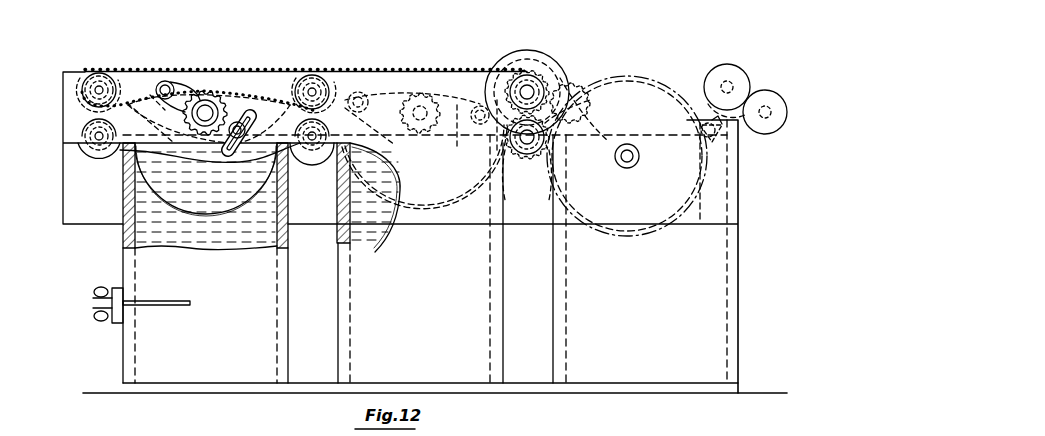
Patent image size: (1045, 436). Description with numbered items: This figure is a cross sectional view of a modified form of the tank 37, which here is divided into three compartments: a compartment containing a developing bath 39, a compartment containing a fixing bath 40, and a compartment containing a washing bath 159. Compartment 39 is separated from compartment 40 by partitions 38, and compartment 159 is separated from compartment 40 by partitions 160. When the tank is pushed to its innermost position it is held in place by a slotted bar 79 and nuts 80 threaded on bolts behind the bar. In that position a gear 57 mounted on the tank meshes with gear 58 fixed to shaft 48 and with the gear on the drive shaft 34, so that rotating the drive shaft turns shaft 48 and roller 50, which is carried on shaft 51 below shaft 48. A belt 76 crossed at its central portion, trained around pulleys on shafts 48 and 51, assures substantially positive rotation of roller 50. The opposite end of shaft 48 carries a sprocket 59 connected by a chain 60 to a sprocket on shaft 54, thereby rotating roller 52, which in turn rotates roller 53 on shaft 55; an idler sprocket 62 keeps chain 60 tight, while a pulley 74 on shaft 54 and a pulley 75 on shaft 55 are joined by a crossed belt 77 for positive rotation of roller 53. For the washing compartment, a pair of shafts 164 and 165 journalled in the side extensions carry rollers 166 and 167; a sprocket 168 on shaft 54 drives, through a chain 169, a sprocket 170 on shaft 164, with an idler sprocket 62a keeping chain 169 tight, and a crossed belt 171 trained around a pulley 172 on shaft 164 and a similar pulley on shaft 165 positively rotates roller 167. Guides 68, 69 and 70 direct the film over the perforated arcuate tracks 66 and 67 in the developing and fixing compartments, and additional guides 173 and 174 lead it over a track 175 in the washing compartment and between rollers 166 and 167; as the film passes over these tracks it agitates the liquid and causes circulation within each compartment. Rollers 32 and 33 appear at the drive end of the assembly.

The roller 32 is at (731, 63).
The roller 33 is at (788, 112).
The drive shaft 34 is at (745, 84).
The tank 37 is at (748, 290).
The partitions 38 is at (490, 308).
The developing bath compartment 39 is at (705, 170).
The fixing bath compartment 40 is at (375, 243).
The shaft 48 is at (531, 90).
The roller 50 is at (521, 160).
The shaft 51 is at (527, 179).
The roller 52 is at (312, 73).
The roller 53 is at (318, 152).
The shaft 54 is at (300, 92).
The shaft 55 is at (274, 158).
The gear 57 is at (650, 86).
The gear 58 is at (527, 50).
The sprocket 59 is at (488, 82).
The chain 60 is at (455, 136).
The idler sprocket 62 is at (396, 146).
The idler sprocket 62a is at (210, 108).
The perforated arcuate-shaped track 66 is at (660, 226).
The perforated arcuate-shaped track 67 is at (420, 215).
The guide 68 is at (482, 162).
The guide 69 is at (596, 132).
The guide 70 is at (402, 112).
The pulley 74 is at (330, 72).
The pulley 75 is at (331, 160).
The belt 76 is at (580, 95).
The crossed belt 77 is at (357, 95).
The bar 79 is at (118, 324).
The nuts 80 is at (95, 318).
The washing bath compartment 159 is at (250, 232).
The partitions 160 is at (277, 322).
The shaft 164 is at (100, 87).
The shaft 165 is at (96, 152).
The roller 166 is at (84, 76).
The roller 167 is at (108, 163).
The sprocket 168 is at (296, 85).
The chain 169 is at (205, 90).
The sprocket 170 is at (128, 70).
The belt 171 is at (86, 120).
The pulley 172 is at (82, 88).
The guide 173 is at (232, 166).
The guide 174 is at (165, 100).
The track 175 is at (190, 216).